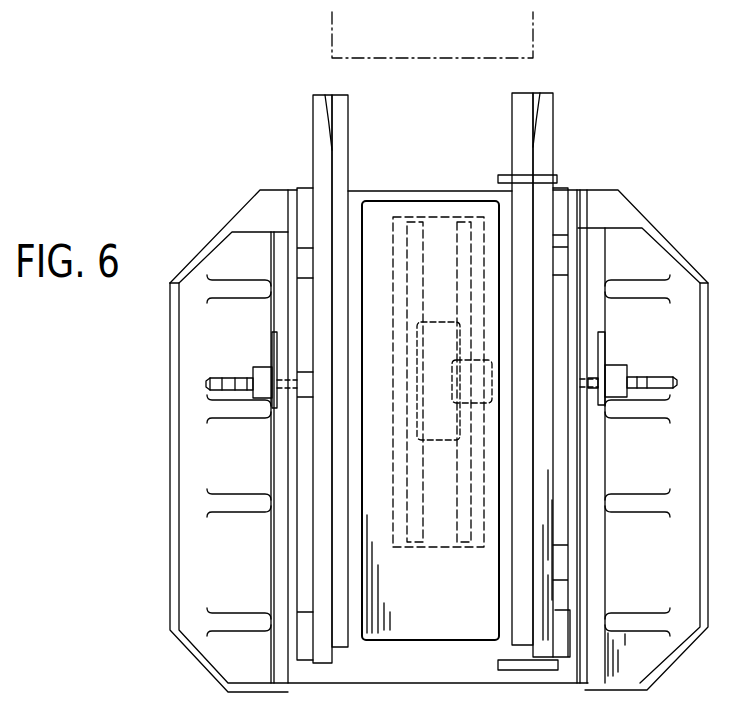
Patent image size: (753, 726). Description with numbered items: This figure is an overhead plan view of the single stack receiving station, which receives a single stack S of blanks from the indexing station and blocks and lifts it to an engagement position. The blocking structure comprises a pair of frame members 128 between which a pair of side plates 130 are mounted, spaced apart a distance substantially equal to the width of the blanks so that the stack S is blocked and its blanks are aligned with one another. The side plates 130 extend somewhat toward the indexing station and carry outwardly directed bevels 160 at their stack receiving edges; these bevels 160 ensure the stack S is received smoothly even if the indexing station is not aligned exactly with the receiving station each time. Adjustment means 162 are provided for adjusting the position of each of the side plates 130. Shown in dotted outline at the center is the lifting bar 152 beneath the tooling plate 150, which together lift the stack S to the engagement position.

The stack S is at (330, 35).
The frame members 128 is at (201, 250).
The side plates 130 is at (312, 127).
The tooling plate 150 is at (395, 205).
The lifting bar 152 is at (440, 430).
The bevels 160 is at (332, 104).
The adjustment means 162 is at (217, 379).